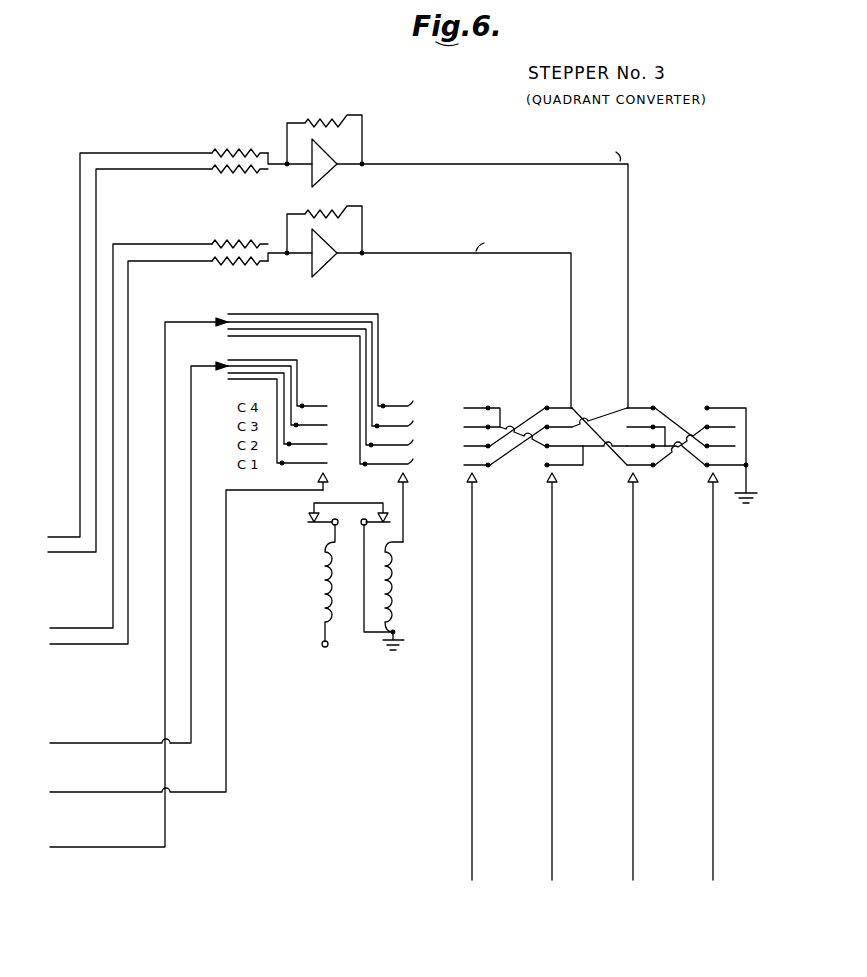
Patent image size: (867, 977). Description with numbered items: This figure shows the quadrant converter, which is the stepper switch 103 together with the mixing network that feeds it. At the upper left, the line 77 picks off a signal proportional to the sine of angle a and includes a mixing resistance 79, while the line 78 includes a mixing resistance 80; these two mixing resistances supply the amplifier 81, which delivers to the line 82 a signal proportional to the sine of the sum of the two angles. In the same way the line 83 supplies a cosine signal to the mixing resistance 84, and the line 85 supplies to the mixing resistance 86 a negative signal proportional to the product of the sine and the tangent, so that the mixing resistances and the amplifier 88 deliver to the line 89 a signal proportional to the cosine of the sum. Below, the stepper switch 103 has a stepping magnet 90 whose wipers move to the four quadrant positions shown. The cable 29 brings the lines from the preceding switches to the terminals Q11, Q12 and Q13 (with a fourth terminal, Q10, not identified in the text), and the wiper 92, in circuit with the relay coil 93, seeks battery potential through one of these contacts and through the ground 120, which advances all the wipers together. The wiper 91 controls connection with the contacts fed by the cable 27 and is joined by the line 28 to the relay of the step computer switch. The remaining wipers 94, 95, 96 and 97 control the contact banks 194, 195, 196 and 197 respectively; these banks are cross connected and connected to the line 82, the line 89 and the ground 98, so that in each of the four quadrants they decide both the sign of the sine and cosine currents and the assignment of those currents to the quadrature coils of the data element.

The cable 27 is at (120, 745).
The line 28 is at (122, 794).
The cable 29 is at (144, 849).
The line 77 is at (161, 153).
The line 78 is at (165, 170).
The mixing resistance 79 is at (228, 150).
The mixing resistance 80 is at (232, 173).
The amplifier 81 is at (326, 180).
The line 82 is at (406, 163).
The line 83 is at (60, 645).
The mixing resistance 84 is at (233, 266).
The line 85 is at (70, 625).
The mixing resistance 86 is at (228, 242).
The amplifier 88 is at (326, 269).
The line 89 is at (406, 252).
The stepping magnet 90 is at (322, 583).
The wiper 91 is at (331, 481).
The wiper 92 is at (404, 483).
The relay coil 93 is at (400, 580).
The wiper 94 is at (475, 478).
The wiper 95 is at (555, 481).
The wiper 96 is at (628, 479).
The wiper 97 is at (708, 479).
The ground 98 is at (748, 500).
The stepper switch 103 is at (335, 89).
The ground 120 is at (400, 642).
The contact bank 194 is at (473, 407).
The contact bank 195 is at (549, 407).
The contact bank 196 is at (644, 407).
The contact bank 197 is at (727, 407).
The relay contact Q10 is at (396, 404).
The terminal Q11 is at (410, 467).
The terminal Q12 is at (406, 447).
The terminal Q13 is at (402, 427).